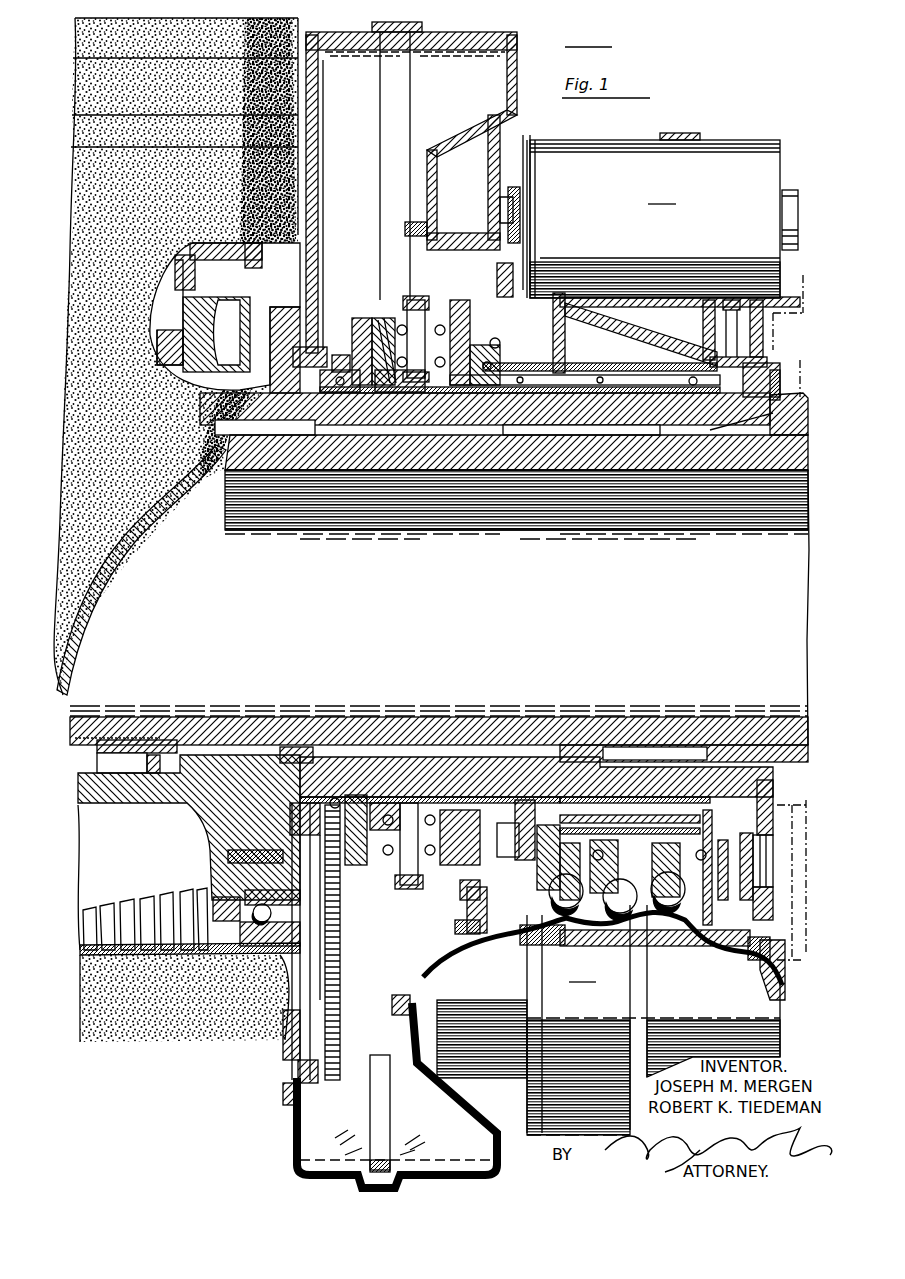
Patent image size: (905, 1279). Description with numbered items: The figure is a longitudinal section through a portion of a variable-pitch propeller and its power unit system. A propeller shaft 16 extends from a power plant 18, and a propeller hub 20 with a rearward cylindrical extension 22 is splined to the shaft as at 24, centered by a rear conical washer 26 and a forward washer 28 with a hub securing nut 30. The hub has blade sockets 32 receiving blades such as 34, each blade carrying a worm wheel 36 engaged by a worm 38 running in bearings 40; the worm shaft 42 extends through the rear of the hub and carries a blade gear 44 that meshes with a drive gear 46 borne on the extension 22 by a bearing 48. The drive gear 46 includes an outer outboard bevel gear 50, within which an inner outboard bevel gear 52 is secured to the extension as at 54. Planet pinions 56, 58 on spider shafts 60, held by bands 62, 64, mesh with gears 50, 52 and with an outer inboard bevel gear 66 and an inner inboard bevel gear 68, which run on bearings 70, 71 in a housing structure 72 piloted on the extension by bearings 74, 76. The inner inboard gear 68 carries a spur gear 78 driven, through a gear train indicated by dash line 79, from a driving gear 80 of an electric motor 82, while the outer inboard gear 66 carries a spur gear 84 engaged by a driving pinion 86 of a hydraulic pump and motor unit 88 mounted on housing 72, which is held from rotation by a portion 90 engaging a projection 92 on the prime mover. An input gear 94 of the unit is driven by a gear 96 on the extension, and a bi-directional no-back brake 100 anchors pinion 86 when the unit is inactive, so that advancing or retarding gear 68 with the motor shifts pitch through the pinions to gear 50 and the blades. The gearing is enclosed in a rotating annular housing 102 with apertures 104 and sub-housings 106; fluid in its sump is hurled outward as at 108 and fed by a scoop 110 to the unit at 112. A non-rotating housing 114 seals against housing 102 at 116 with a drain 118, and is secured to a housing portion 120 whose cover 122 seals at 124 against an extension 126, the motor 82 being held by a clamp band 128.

The propeller shaft 16 is at (400, 718).
The power plant 18 is at (794, 880).
The propeller hub 20 is at (192, 812).
The rearward cylindrical extension 22 is at (565, 396).
The spline 24 is at (507, 720).
The rear conical centering washer 26 is at (742, 437).
The forward conical centering washer 28 is at (200, 752).
The propeller hub securing nut 30 is at (145, 756).
The blade socket 32 is at (78, 173).
The propeller blade 34 is at (214, 262).
The worm wheel 36 is at (232, 340).
The worm 38 is at (103, 912).
The bearing 40 is at (218, 897).
The worm shaft 42 is at (301, 941).
The blade gear 44 is at (352, 900).
The drive gear 46 is at (336, 340).
The bearing 48 is at (330, 800).
The outer outboard bevel gear 50 is at (362, 318).
The inner outboard bevel gear 52 is at (348, 352).
The securing connection 54 is at (350, 392).
The outer beveled planet pinion 56 is at (385, 318).
The inner beveled planet pinion 58 is at (390, 392).
The spider shaft 60 is at (418, 298).
The band 62 is at (460, 300).
The band 64 is at (470, 385).
The outer inboard bevel gear 66 is at (445, 325).
The inner inboard bevel gear 68 is at (474, 393).
The bearing 70 is at (500, 343).
The bearing 71 is at (491, 366).
The housing structure 72 is at (612, 360).
The bearing 74 is at (523, 381).
The bearing 76 is at (688, 381).
The spur gear 78 is at (508, 270).
The dash line 79 is at (530, 246).
The driving gear 80 is at (514, 187).
The electric motor 82 is at (662, 219).
The spur gear 84 is at (460, 895).
The driving pinion 86 is at (455, 927).
The hydraulic pump and motor power unit 88 is at (608, 1020).
The housing portion 90 is at (760, 905).
The projection 92 is at (762, 880).
The input gear 94 is at (712, 895).
The driving gear 96 is at (728, 857).
The bi-directional no-back brake 100 is at (528, 937).
The annular housing 102 is at (304, 1135).
The aperture 104 is at (283, 1087).
The sub-housing 106 is at (285, 1070).
The centrifugally pressurized fluid 108 is at (476, 1148).
The scoop 110 is at (388, 1115).
The hydraulic unit feed end 112 is at (790, 958).
The intermediate non-rotating housing 114 is at (445, 240).
The seal 116 is at (405, 228).
The drain 118 is at (388, 1004).
The housing portion 120 is at (620, 340).
The cover 122 is at (766, 330).
The sealing engagement 124 is at (786, 365).
The extension 126 is at (788, 385).
The clamp band 128 is at (690, 130).